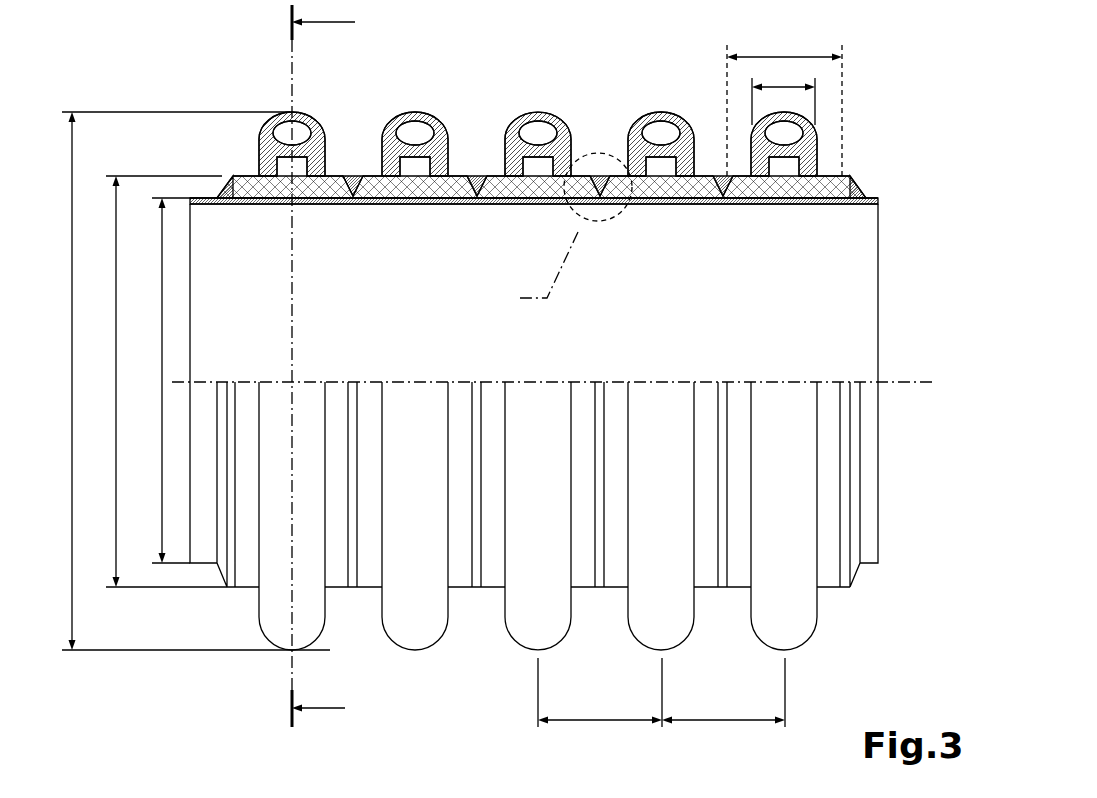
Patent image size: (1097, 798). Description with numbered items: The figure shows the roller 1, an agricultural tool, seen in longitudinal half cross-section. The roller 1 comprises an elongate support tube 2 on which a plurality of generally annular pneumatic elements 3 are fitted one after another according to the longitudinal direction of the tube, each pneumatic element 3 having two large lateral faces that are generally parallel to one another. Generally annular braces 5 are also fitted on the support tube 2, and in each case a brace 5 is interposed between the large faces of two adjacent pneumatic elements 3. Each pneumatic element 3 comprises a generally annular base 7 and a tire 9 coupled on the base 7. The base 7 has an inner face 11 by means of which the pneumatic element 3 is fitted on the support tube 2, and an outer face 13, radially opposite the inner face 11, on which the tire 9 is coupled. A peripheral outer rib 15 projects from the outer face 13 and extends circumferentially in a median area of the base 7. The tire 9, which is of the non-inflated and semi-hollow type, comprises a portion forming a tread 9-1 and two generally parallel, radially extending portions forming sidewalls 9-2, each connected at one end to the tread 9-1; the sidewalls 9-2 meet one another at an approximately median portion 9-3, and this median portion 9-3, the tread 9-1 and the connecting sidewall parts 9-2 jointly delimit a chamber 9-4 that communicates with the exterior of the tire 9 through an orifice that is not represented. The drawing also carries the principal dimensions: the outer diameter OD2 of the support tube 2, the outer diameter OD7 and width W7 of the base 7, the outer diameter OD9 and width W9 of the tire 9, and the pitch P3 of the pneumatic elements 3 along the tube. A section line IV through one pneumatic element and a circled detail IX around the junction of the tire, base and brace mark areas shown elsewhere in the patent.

The roller 1 is at (902, 633).
The support tube 2 is at (868, 196).
The pneumatic element 3 is at (306, 650).
The brace 5 is at (233, 177).
The base 7 is at (255, 190).
The tire 9 is at (260, 627).
The tread 9-1 is at (283, 112).
The sidewall 9-2 is at (257, 147).
The median portion 9-3 is at (790, 147).
The chamber 9-4 is at (368, 112).
The inner face 11 is at (300, 212).
The outer face 13 is at (243, 160).
The outer rib 15 is at (282, 167).
The outer diameter of the support tube OD2 is at (162, 518).
The outer diameter of the base OD7 is at (116, 545).
The outer diameter of the tire OD9 is at (72, 612).
The width of the base W7 is at (782, 55).
The width of the tire W9 is at (788, 82).
The pitch of the pneumatic elements P3 is at (597, 722).
The section line IV is at (360, 10).
The detail IX is at (482, 286).